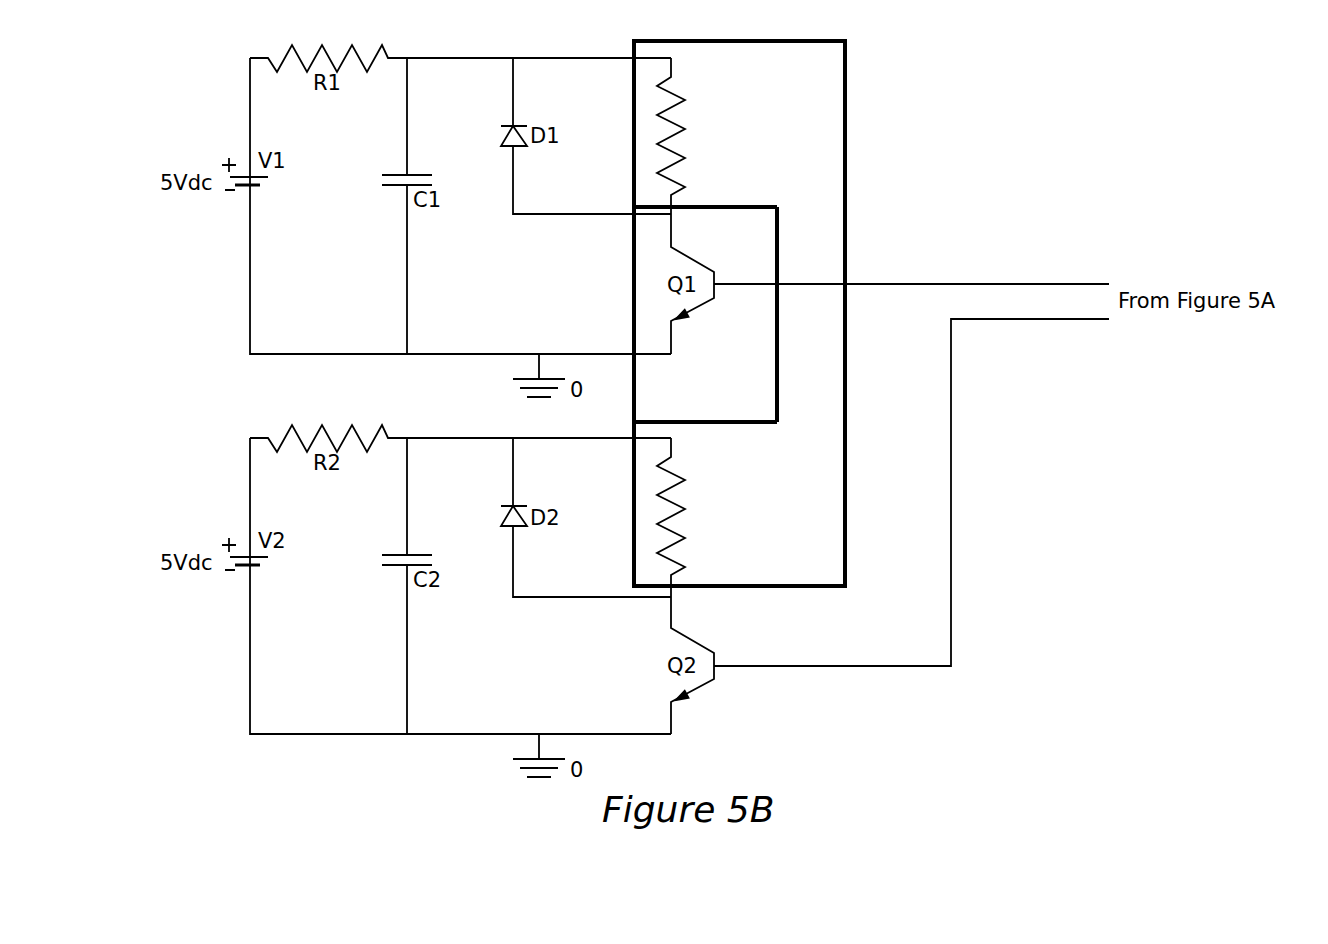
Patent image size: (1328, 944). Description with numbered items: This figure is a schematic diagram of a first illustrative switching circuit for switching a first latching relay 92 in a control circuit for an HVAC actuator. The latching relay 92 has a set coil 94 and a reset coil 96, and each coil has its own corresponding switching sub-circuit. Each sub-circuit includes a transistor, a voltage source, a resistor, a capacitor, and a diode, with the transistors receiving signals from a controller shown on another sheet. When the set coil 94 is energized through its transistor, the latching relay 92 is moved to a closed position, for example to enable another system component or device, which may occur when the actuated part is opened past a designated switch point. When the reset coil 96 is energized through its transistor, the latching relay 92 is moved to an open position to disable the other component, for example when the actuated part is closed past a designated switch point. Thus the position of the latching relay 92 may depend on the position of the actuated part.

The latching relay 92 is at (825, 230).
The set coil 94 is at (825, 93).
The reset coil 96 is at (825, 518).